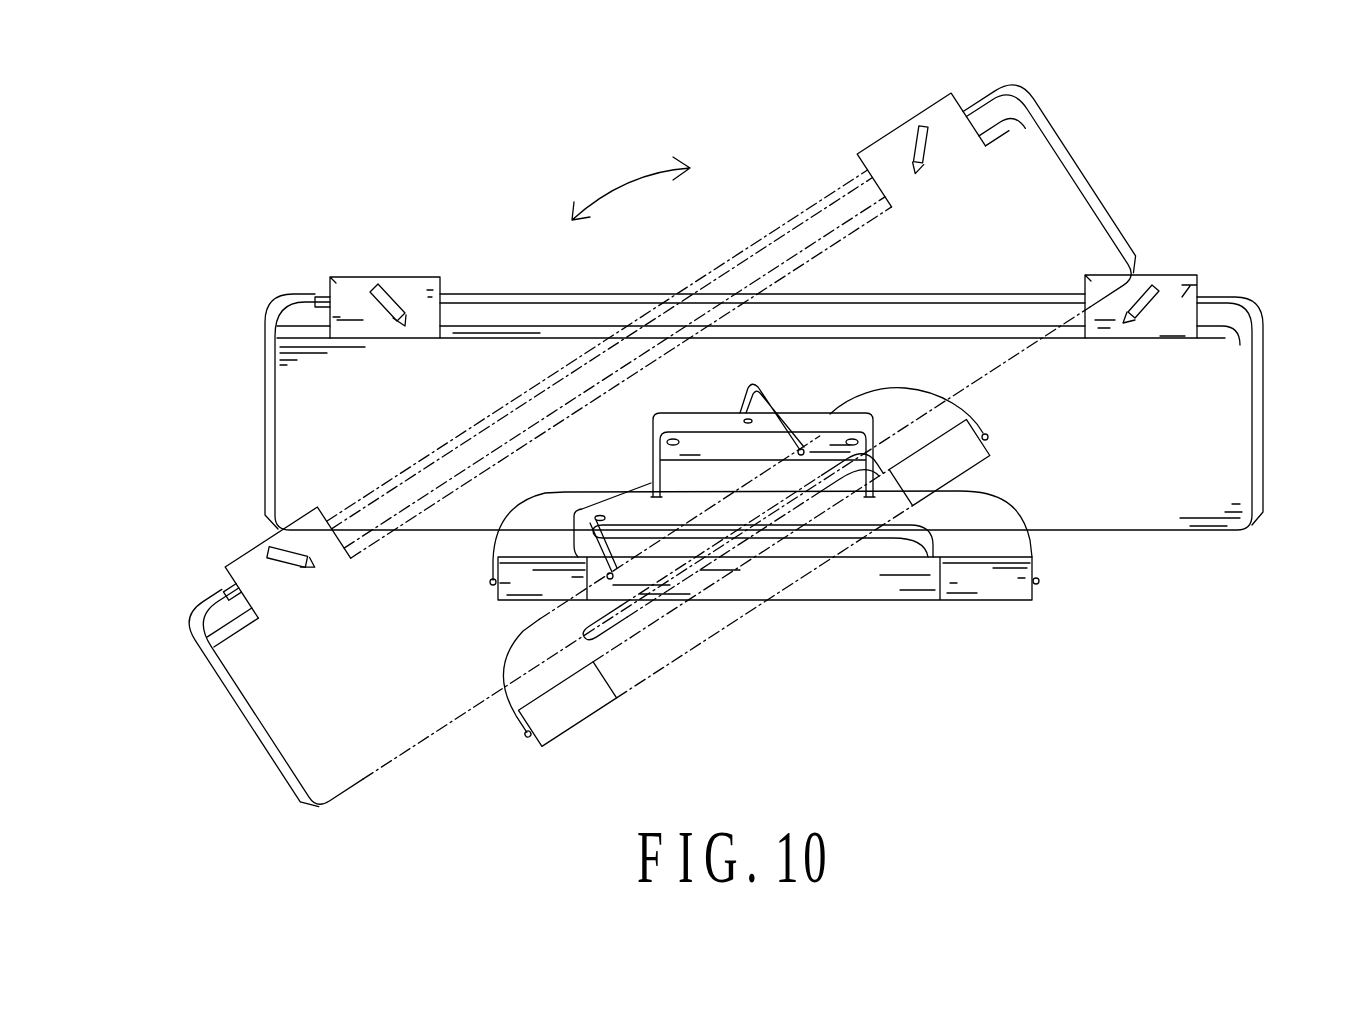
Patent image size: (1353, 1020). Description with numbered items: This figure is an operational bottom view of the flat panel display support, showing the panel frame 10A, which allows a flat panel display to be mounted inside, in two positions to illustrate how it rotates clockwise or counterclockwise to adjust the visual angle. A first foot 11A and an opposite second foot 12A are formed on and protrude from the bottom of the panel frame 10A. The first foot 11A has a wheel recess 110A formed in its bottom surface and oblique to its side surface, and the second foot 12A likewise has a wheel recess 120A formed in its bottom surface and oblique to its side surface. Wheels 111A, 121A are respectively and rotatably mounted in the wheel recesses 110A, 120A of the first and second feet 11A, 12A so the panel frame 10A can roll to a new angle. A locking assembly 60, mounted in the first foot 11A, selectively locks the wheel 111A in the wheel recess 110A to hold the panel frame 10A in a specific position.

The panel frame 10A is at (1043, 148).
The first foot 11A is at (413, 283).
The wheel recess 110A is at (397, 322).
The wheel 111A is at (393, 286).
The second foot 12A is at (1190, 290).
The wheel recess 120A is at (1137, 318).
The wheel 121A is at (1137, 290).
The locking assembly 60 is at (318, 289).